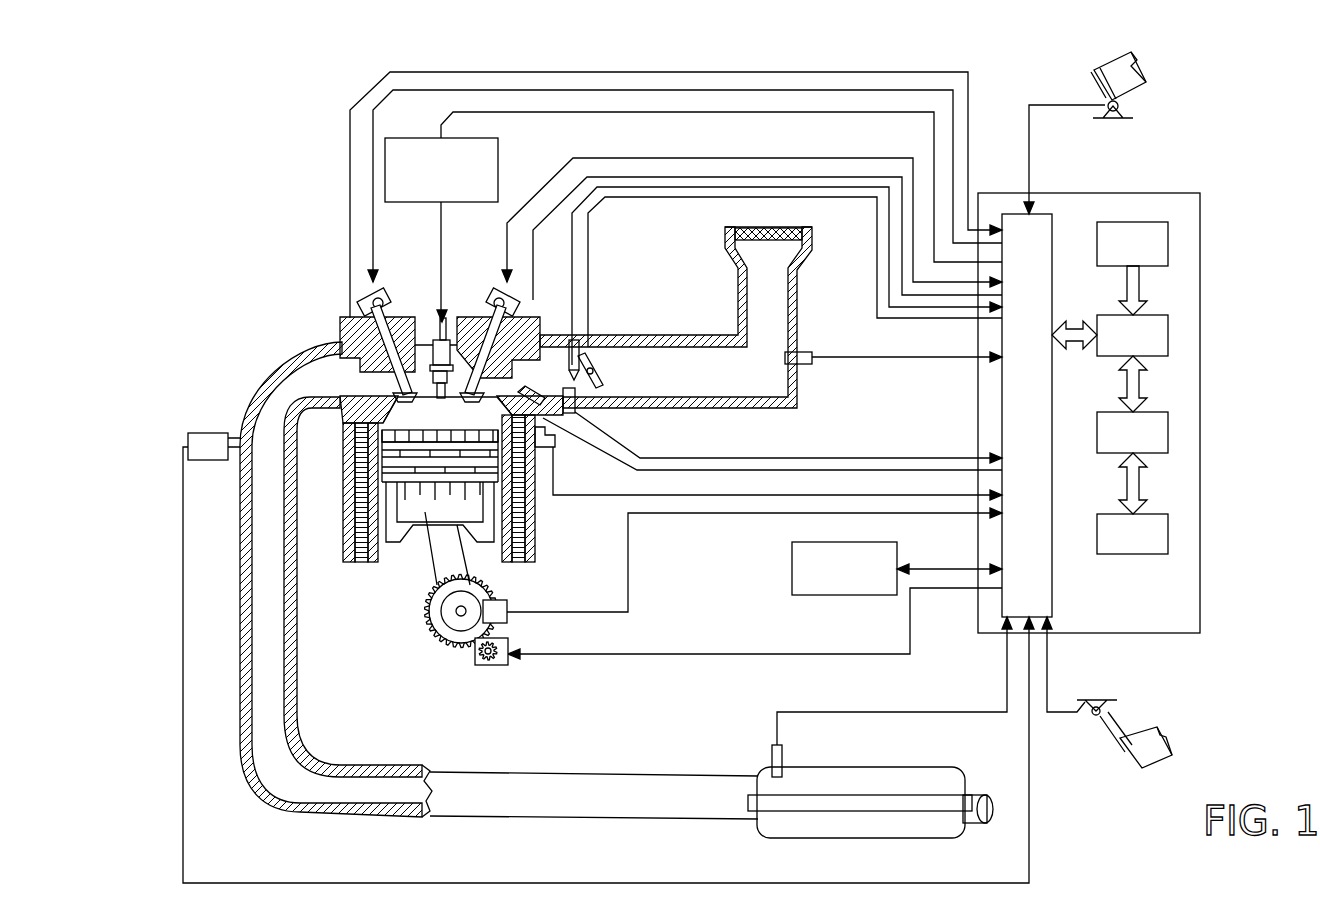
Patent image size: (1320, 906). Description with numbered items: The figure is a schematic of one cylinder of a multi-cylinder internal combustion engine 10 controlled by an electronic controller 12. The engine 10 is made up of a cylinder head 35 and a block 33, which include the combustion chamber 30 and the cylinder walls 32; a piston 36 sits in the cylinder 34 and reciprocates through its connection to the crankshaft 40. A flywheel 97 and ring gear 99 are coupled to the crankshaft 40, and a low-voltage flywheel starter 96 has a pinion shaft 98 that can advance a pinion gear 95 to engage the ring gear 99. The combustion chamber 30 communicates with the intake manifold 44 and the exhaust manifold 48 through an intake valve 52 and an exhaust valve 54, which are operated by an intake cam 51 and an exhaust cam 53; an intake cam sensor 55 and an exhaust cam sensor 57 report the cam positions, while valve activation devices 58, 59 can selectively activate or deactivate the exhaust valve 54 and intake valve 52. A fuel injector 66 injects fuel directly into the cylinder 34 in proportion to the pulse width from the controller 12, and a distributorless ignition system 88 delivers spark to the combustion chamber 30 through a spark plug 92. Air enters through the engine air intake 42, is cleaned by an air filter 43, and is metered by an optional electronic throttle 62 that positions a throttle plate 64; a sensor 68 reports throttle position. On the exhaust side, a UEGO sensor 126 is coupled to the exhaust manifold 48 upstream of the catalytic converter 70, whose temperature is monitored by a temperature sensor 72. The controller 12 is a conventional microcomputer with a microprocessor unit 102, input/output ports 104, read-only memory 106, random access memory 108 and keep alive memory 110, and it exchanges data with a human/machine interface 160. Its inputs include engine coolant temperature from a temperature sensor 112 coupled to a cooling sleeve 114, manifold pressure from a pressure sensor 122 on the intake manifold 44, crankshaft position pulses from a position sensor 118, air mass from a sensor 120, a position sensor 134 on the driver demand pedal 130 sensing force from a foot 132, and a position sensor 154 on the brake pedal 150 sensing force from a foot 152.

The internal combustion engine 10 is at (281, 274).
The electronic controller 12 is at (1197, 194).
The combustion chamber 30 is at (438, 416).
The cylinder walls 32 is at (387, 550).
The block 33 is at (341, 458).
The cylinder 34 is at (418, 548).
The cylinder head 35 is at (340, 325).
The piston 36 is at (423, 512).
The crankshaft 40 is at (442, 640).
The engine air intake 42 is at (712, 248).
The air filter 43 is at (780, 240).
The intake manifold 44 is at (541, 391).
The exhaust manifold 48 is at (298, 391).
The intake cam 51 is at (494, 282).
The intake valve 52 is at (488, 372).
The exhaust cam 53 is at (386, 282).
The exhaust valve 54 is at (397, 387).
The intake cam sensor 55 is at (520, 310).
The exhaust cam sensor 57 is at (360, 300).
The valve activation device 58 is at (384, 302).
The valve activation device 59 is at (494, 302).
The electronic throttle 62 is at (598, 370).
The throttle plate 64 is at (593, 380).
The fuel injector 66 is at (548, 422).
The throttle position sensor 68 is at (572, 342).
The catalytic converter 70 is at (797, 767).
The temperature sensor 72 is at (780, 752).
The distributorless ignition system 88 is at (400, 138).
The spark plug 92 is at (445, 300).
The pinion gear 95 is at (497, 662).
The flywheel starter 96 is at (503, 665).
The flywheel 97 is at (435, 607).
The pinion shaft 98 is at (485, 665).
The ring gear 99 is at (453, 653).
The microprocessor unit 102 is at (1170, 337).
The input/output ports 104 is at (1054, 222).
The read-only memory 106 is at (1170, 241).
The random access memory 108 is at (1170, 433).
The keep alive memory 110 is at (1170, 535).
The temperature sensor 112 is at (768, 461).
The cooling sleeve 114 is at (535, 505).
The position sensor 118 is at (505, 603).
The air mass sensor 120 is at (808, 353).
The pressure sensor 122 is at (580, 410).
The Universal Exhaust Gas Oxygen sensor 126 is at (188, 437).
The driver demand pedal 130 is at (1090, 82).
The foot 132 is at (1145, 80).
The position sensor 134 is at (1120, 105).
The brake pedal 150 is at (1118, 760).
The foot 152 is at (1152, 732).
The position sensor 154 is at (1083, 698).
The human/machine interface 160 is at (897, 568).